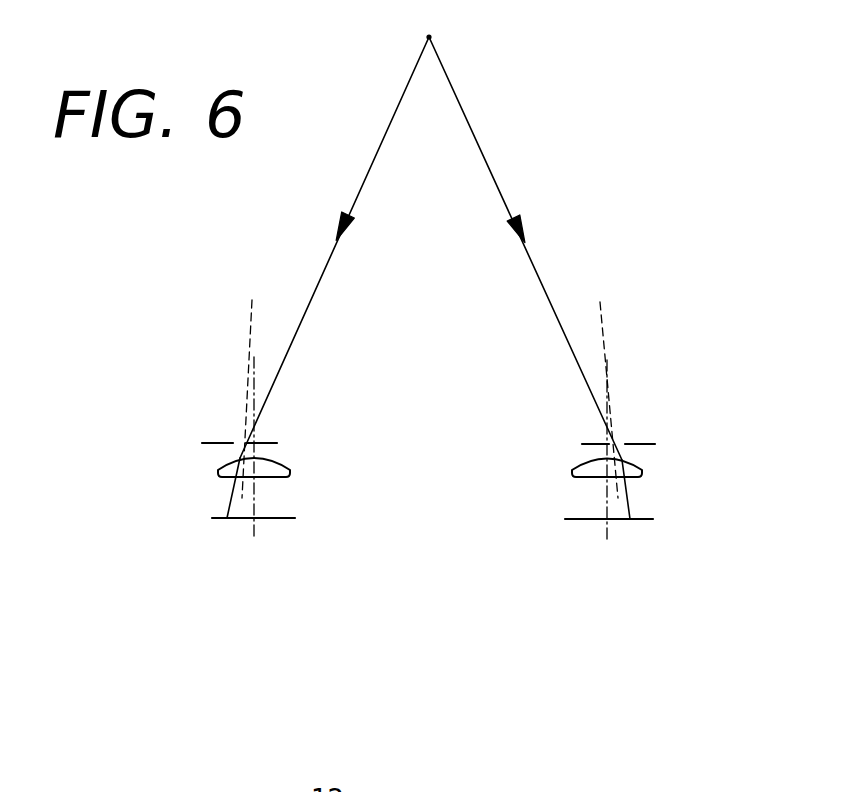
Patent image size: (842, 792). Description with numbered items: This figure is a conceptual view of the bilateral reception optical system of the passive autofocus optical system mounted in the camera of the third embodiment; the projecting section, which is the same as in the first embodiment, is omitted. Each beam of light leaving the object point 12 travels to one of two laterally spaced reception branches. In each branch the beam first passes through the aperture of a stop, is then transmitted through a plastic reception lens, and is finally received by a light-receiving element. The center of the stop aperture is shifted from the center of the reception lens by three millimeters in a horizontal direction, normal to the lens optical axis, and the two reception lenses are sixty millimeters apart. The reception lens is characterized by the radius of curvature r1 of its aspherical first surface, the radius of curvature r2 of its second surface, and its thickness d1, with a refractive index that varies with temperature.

The object point 12 is at (433, 33).
The radius of curvature of the first lens surface r1 is at (584, 461).
The radius of curvature of the second lens surface r2 is at (583, 479).
The lens thickness d1 is at (625, 468).